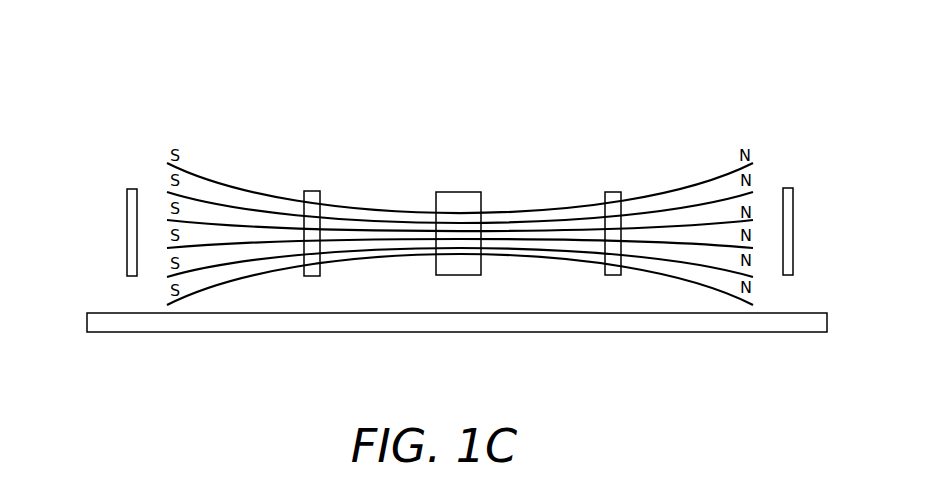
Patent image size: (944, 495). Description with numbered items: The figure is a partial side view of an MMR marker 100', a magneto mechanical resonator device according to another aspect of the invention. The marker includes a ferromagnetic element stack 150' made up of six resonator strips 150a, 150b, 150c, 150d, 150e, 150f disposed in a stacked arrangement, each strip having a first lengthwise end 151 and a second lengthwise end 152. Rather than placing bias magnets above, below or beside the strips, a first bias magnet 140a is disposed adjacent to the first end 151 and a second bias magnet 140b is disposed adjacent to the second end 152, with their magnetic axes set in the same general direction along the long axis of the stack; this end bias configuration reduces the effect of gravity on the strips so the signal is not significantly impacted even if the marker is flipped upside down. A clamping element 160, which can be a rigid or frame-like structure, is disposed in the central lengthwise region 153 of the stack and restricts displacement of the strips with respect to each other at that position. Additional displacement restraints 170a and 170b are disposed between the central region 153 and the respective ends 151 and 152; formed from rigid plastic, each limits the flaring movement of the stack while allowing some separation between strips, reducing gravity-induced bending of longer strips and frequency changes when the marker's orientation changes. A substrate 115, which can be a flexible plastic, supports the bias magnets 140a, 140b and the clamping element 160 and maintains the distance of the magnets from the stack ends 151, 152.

The MMR marker 100' is at (734, 82).
The substrate 115 is at (160, 323).
The first bias magnet 140a is at (127, 230).
The second bias magnet 140b is at (793, 228).
The ferromagnetic element stack 150' is at (649, 134).
The resonator strip 150a is at (683, 192).
The resonator strip 150b is at (648, 217).
The resonator strip 150c is at (582, 230).
The resonator strip 150d is at (505, 238).
The resonator strip 150e is at (293, 253).
The resonator strip 150f is at (242, 278).
The first lengthwise end 151 is at (218, 179).
The second lengthwise end 152 is at (709, 176).
The central lengthwise region 153 is at (489, 188).
The clamping element 160 is at (452, 192).
The first additional displacement restraint 170a is at (312, 191).
The second additional displacement restraint 170b is at (613, 192).